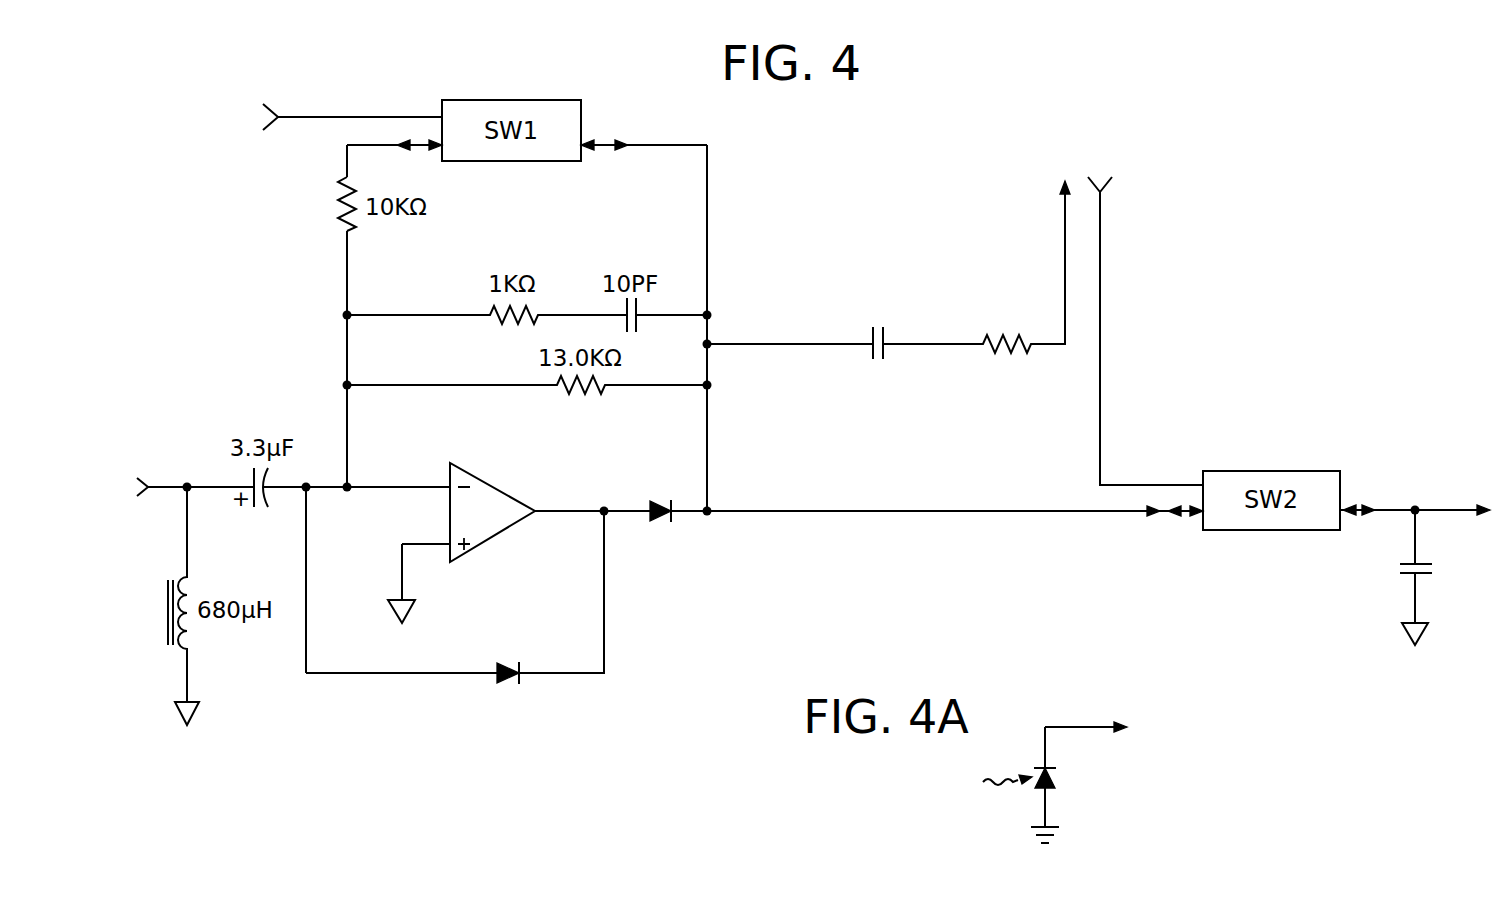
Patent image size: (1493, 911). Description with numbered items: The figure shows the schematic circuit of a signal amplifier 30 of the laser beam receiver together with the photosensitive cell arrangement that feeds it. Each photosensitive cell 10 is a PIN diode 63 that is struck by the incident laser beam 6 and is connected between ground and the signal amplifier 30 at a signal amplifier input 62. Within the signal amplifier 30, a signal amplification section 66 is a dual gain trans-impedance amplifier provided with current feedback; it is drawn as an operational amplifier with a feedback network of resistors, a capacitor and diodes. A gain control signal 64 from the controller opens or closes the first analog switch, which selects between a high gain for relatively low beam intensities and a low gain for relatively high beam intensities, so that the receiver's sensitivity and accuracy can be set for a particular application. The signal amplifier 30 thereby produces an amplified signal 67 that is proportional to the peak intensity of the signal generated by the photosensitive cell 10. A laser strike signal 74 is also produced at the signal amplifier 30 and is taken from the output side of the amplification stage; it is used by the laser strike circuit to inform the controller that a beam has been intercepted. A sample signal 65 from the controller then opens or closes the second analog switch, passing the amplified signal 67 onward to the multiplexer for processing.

In FIG. 4, the gain control signal 64 is at (335, 117).
In FIG. 4, the signal amplifier input 62 is at (168, 485).
In FIG. 4A, the signal amplifier input 62 is at (1075, 727).
In FIG. 4, the signal amplification section 66 is at (415, 700).
In FIG. 4, the laser strike signal 74 is at (1063, 222).
In FIG. 4, the sample signal 65 is at (1102, 250).
In FIG. 4, the signal amplifier 30 is at (1253, 320).
In FIG. 4, the amplified signal 67 is at (1440, 508).
In FIG. 4A, the photosensitive cell 10 is at (1102, 751).
In FIG. 4A, the PIN diode 63 is at (1057, 780).
In FIG. 4A, the laser beam 6 is at (1000, 790).